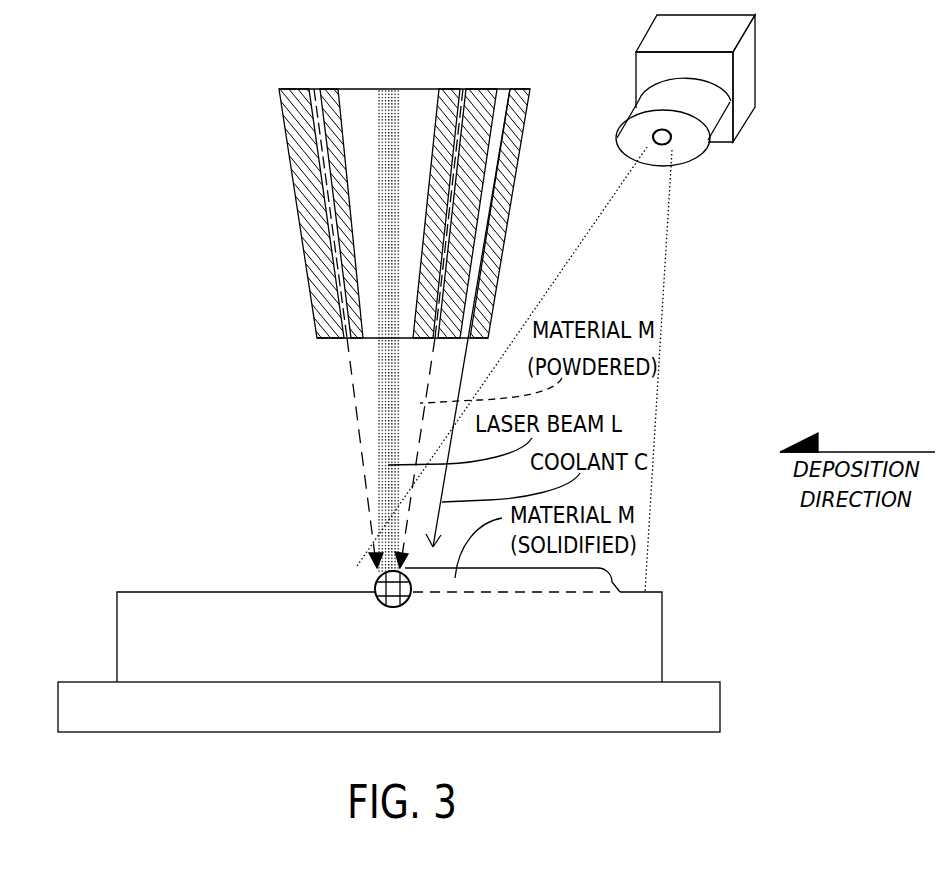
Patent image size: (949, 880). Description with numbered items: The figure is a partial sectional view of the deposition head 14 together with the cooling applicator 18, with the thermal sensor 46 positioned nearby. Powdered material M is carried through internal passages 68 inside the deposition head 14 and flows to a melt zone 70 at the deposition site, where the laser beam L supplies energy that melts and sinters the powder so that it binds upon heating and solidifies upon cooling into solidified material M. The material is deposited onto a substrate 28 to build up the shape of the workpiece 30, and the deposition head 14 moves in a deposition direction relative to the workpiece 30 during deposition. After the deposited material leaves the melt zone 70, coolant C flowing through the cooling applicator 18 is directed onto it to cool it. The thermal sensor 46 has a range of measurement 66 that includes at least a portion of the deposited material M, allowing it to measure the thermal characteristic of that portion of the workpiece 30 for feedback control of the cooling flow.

The deposition head 14 is at (314, 356).
The cooling applicator 18 is at (463, 338).
The substrate 28 is at (400, 716).
The workpiece 30 is at (465, 670).
The thermal sensor 46 is at (757, 85).
The range of measurement 66 is at (662, 323).
The internal passages 68 is at (316, 100).
The melt zone 70 is at (380, 573).